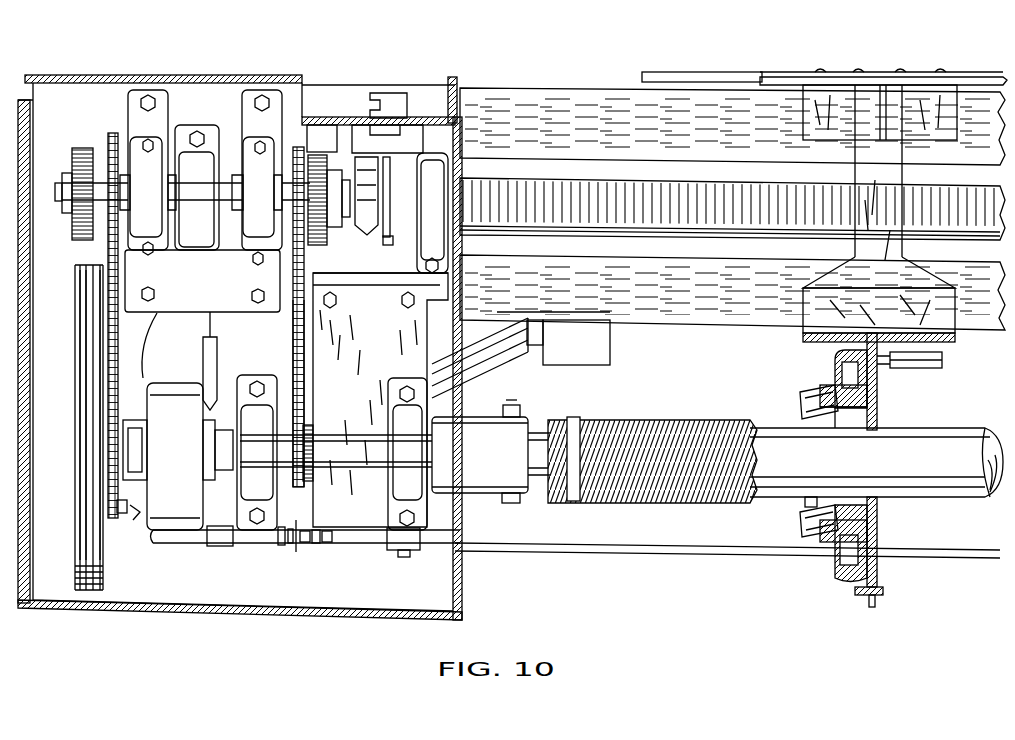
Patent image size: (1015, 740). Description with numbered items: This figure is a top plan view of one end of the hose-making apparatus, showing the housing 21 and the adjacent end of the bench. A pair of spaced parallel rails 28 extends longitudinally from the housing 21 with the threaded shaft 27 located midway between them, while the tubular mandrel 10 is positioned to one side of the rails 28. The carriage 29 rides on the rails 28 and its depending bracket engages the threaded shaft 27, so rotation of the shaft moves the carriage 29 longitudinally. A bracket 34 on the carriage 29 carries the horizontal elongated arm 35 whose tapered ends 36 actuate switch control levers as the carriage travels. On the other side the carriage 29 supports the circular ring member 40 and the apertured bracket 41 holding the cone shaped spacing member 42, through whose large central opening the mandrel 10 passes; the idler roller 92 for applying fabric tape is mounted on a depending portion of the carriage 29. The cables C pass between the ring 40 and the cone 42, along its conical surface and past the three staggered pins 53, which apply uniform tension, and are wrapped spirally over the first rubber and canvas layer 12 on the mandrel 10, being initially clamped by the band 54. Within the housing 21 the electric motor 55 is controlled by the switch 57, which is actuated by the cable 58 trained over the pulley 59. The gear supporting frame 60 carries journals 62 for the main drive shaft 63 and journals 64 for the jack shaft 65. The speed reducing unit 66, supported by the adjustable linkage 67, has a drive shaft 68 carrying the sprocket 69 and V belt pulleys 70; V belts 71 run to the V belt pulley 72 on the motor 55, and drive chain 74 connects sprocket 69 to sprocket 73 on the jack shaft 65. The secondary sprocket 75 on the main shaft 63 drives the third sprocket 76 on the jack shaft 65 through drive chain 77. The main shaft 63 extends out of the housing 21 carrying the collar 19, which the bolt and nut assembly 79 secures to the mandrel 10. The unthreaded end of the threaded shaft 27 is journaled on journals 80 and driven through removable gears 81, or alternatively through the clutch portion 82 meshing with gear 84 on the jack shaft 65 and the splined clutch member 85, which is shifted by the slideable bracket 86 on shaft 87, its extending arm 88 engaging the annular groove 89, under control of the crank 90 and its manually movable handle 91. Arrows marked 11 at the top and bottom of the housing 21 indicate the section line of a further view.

The tubular mandrel 10 is at (537, 432).
The output shaft 11 is at (52, 100).
The first rubber and canvas layer 12 is at (995, 500).
The collar 19 is at (483, 493).
The housing 21 is at (455, 572).
The threaded shaft 27 is at (585, 188).
The rails 28 is at (732, 209).
The carriage 29 is at (880, 213).
The bracket 34 is at (790, 77).
The elongated arm 35 is at (750, 78).
The tapered ends 36 is at (642, 78).
The circular ring member 40 is at (873, 600).
The apertured bracket 41 is at (878, 416).
The cone shaped spacing member 42 is at (835, 548).
The pins 53 is at (806, 400).
The band 54 is at (577, 418).
The electric motor 55 is at (157, 350).
The controlling switch 57 is at (282, 545).
The cable 58 is at (626, 552).
The pulley 59 is at (382, 550).
The gear supporting frame 60 is at (286, 388).
The journals 62 is at (263, 480).
The main drive shaft 63 is at (333, 438).
The journals 64 is at (201, 196).
The jack shaft 65 is at (186, 195).
The speed reducing unit 66 is at (178, 456).
The adjustable linkage 67 is at (205, 357).
The drive shaft 68 is at (135, 522).
The sprocket 69 is at (112, 518).
The V belt pulleys 70 is at (73, 506).
The V belts 71 is at (88, 337).
The V belt pulley 72 is at (73, 293).
The sprocket 73 is at (109, 134).
The drive chain 74 is at (108, 352).
The secondary sprocket 75 is at (306, 426).
The third sprocket 76 is at (298, 154).
The drive chain 77 is at (300, 337).
The bolt and nut assembly 79 is at (512, 503).
The journals 80 is at (210, 239).
The removable gears 81 is at (78, 152).
The clutch portion 82 is at (345, 274).
The gear 84 is at (318, 247).
The clutch member 85 is at (372, 236).
The slideable bracket 86 is at (387, 142).
The shaft 87 is at (342, 125).
The extending arm 88 is at (388, 215).
The annular groove 89 is at (396, 248).
The crank 90 is at (380, 98).
The manually movable handle 91 is at (448, 96).
The idler roller 92 is at (947, 362).
The cables C is at (638, 421).